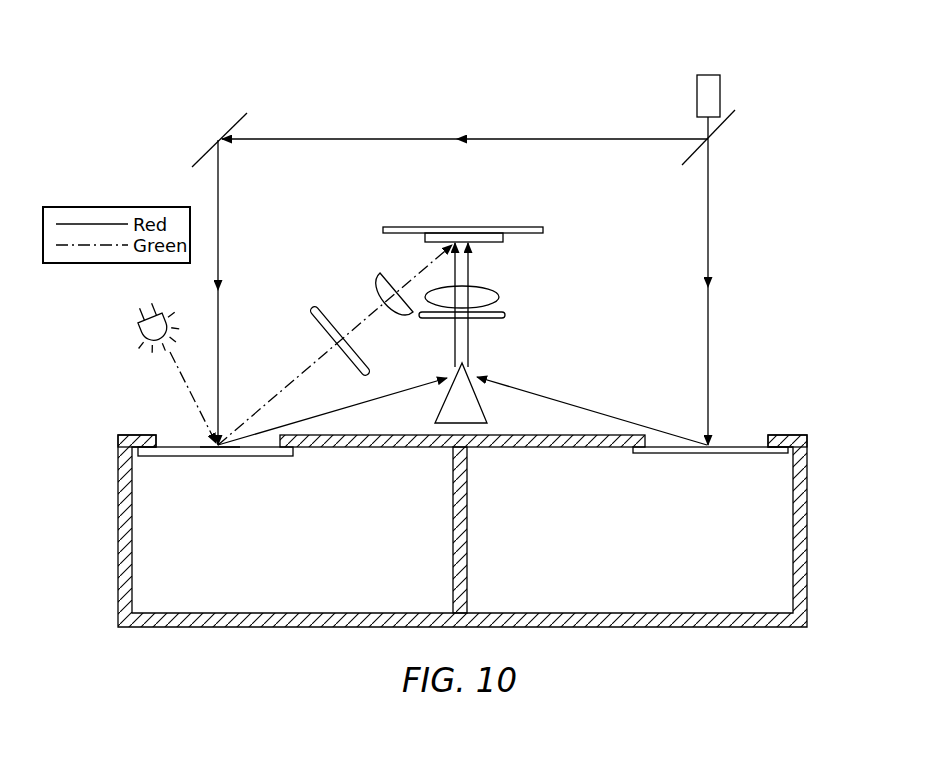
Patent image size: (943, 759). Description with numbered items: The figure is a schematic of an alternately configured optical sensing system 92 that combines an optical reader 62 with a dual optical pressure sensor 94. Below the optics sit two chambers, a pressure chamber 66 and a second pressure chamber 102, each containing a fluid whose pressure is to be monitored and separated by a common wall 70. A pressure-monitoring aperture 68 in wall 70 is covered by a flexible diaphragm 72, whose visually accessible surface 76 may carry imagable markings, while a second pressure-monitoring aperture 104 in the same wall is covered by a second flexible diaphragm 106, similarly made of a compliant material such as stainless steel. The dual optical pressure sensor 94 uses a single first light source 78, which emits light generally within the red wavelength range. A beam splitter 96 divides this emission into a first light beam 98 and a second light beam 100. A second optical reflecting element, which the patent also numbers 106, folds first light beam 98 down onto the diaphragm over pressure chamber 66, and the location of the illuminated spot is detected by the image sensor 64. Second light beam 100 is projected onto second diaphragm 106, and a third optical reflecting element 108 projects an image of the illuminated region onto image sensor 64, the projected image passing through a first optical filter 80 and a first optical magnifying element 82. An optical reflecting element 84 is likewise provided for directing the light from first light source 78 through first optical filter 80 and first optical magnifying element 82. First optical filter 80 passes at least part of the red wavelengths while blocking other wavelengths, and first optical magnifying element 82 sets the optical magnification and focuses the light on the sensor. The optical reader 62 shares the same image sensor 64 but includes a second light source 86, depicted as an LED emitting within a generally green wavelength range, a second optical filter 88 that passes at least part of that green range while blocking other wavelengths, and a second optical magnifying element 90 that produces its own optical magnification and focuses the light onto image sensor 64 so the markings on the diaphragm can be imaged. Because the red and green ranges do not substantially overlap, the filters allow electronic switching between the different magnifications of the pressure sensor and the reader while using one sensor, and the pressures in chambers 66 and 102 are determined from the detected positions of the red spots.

The optical reader 62 is at (305, 270).
The image sensor 64 is at (505, 240).
The pressure chamber 66 is at (318, 545).
The pressure-monitoring aperture 68 is at (158, 440).
The wall 70 is at (522, 448).
The flexible diaphragm 72 is at (253, 458).
The visually accessible surface 76 is at (177, 447).
The first light source 78 is at (708, 74).
The first optical filter 80 is at (506, 316).
The first optical magnifying element 82 is at (496, 300).
The optical reflecting element 84 is at (440, 411).
The second light source 86 is at (140, 332).
The second optical filter 88 is at (318, 312).
The second optical magnifying element 90 is at (382, 281).
The optical sensing system 92 is at (140, 147).
The dual optical pressure sensor 94 is at (527, 355).
The beam splitter 96 is at (728, 120).
The first light beam 98 is at (355, 137).
The second light beam 100 is at (708, 255).
The second pressure chamber 102 is at (670, 545).
The second pressure-monitoring aperture 104 is at (767, 433).
The second flexible diaphragm 106 is at (232, 126).
The third optical reflecting element 108 is at (487, 413).